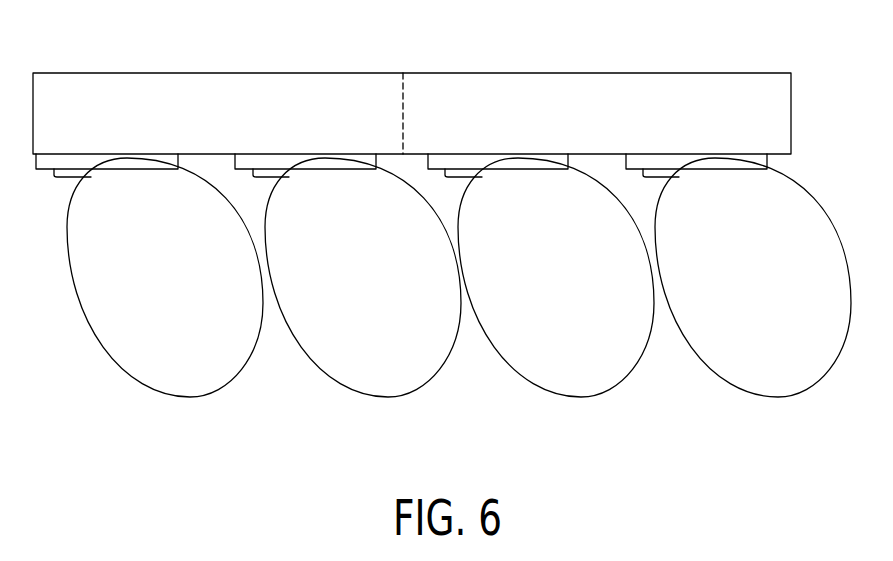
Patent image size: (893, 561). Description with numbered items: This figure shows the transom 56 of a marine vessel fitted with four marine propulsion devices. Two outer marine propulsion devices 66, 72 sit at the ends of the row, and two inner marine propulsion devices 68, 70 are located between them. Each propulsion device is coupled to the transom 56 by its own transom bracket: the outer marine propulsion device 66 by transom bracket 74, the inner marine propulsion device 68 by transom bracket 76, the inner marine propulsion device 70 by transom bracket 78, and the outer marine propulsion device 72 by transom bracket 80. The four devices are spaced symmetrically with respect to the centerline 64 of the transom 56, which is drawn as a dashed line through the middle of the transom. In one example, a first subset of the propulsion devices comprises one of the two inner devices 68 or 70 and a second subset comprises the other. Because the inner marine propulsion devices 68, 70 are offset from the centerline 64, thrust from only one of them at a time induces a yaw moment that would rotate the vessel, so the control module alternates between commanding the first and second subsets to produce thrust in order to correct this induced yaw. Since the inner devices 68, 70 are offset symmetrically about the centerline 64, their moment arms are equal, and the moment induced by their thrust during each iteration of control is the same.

The transom 56 is at (595, 72).
The centerline 64 is at (405, 77).
The outer marine propulsion device 66 is at (165, 397).
The inner marine propulsion device 68 is at (386, 397).
The inner marine propulsion device 70 is at (588, 397).
The outer marine propulsion device 72 is at (782, 397).
The transom bracket 74 is at (76, 162).
The transom bracket 76 is at (276, 162).
The transom bracket 78 is at (457, 162).
The transom bracket 80 is at (659, 162).